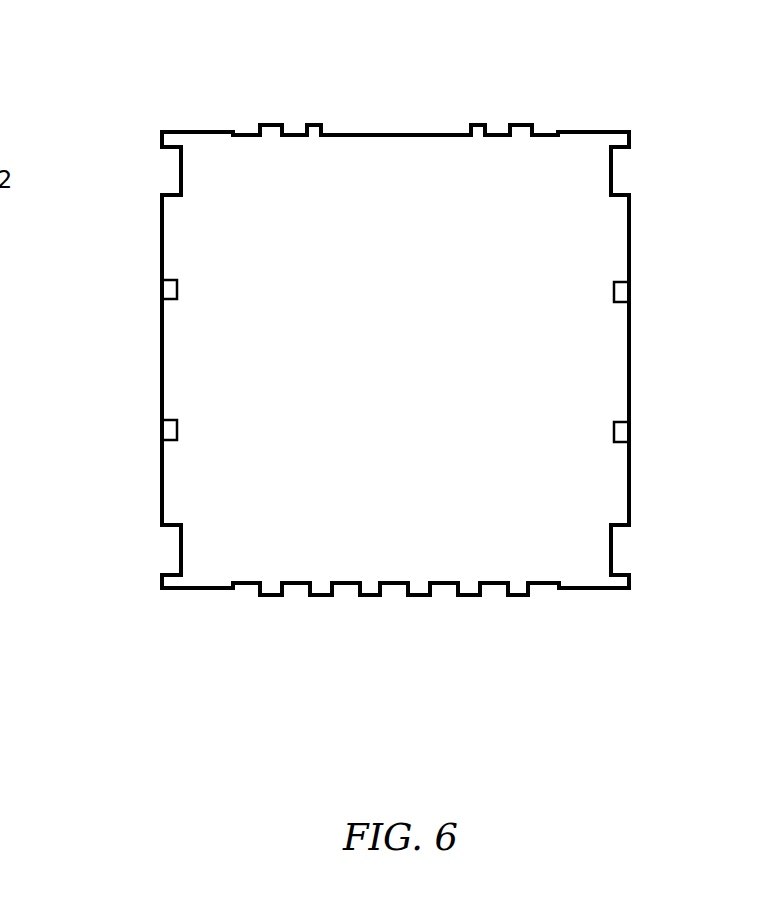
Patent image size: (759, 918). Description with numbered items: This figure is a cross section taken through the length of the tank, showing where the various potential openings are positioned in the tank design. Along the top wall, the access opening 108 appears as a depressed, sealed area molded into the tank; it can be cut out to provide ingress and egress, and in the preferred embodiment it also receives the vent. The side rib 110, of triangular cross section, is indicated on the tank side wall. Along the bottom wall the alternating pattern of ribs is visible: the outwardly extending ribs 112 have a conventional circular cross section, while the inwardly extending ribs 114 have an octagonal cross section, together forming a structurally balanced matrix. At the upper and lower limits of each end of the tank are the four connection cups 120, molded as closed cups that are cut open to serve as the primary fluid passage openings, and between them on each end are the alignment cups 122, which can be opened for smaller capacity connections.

The access opening 108 is at (379, 134).
The side rib 110 is at (0, 263).
The outwardly extending ribs 112 is at (367, 596).
The inwardly extending ribs 114 is at (388, 588).
The connection cups 120 is at (177, 172).
The alignment cups 122 is at (175, 283).